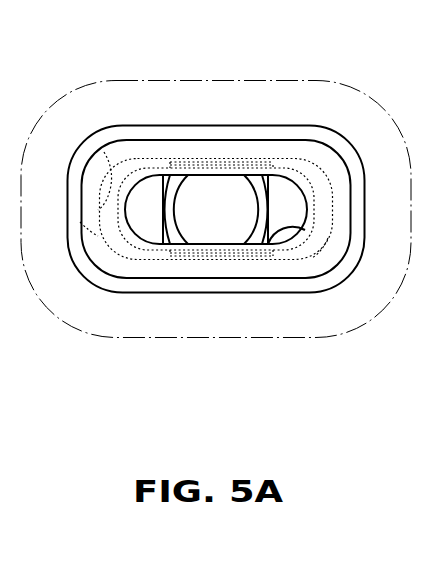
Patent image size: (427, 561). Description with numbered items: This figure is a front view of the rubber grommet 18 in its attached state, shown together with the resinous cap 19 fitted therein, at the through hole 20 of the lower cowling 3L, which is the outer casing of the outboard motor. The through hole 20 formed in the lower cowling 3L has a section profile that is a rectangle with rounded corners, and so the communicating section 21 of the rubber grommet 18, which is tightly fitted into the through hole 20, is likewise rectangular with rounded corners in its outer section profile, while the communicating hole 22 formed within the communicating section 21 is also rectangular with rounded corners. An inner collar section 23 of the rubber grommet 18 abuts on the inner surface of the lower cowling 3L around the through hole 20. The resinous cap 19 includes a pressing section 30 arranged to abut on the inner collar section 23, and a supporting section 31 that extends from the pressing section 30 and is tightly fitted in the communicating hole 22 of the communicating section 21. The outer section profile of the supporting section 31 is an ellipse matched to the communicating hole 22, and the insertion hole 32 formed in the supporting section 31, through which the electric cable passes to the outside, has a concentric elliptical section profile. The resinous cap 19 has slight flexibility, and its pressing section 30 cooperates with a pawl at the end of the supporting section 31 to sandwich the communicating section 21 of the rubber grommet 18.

The lower cowling 3L is at (360, 295).
The rubber grommet 18 is at (193, 126).
The resinous cap 19 is at (245, 140).
The through hole 20 is at (189, 221).
The communicating section 21 is at (100, 218).
The communicating hole 22 is at (278, 177).
The inner collar section 23 is at (245, 165).
The pressing section 30 is at (216, 211).
The supporting section 31 is at (318, 252).
The insertion hole 32 is at (268, 244).